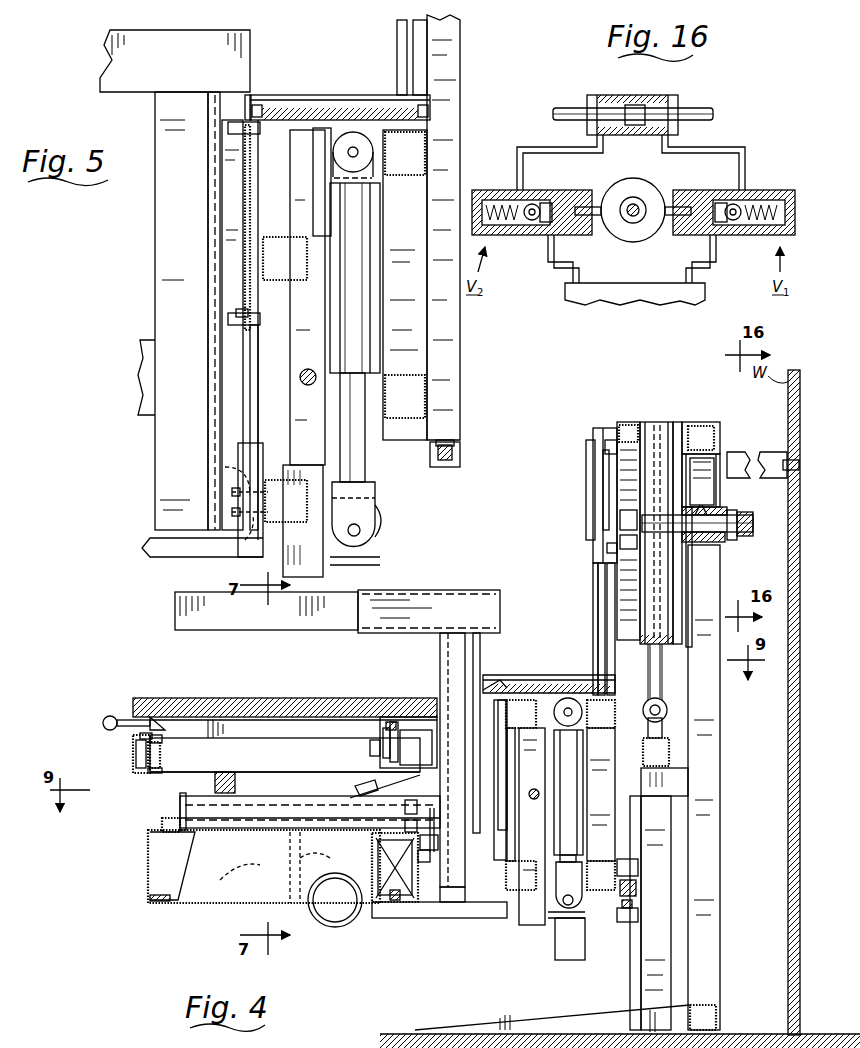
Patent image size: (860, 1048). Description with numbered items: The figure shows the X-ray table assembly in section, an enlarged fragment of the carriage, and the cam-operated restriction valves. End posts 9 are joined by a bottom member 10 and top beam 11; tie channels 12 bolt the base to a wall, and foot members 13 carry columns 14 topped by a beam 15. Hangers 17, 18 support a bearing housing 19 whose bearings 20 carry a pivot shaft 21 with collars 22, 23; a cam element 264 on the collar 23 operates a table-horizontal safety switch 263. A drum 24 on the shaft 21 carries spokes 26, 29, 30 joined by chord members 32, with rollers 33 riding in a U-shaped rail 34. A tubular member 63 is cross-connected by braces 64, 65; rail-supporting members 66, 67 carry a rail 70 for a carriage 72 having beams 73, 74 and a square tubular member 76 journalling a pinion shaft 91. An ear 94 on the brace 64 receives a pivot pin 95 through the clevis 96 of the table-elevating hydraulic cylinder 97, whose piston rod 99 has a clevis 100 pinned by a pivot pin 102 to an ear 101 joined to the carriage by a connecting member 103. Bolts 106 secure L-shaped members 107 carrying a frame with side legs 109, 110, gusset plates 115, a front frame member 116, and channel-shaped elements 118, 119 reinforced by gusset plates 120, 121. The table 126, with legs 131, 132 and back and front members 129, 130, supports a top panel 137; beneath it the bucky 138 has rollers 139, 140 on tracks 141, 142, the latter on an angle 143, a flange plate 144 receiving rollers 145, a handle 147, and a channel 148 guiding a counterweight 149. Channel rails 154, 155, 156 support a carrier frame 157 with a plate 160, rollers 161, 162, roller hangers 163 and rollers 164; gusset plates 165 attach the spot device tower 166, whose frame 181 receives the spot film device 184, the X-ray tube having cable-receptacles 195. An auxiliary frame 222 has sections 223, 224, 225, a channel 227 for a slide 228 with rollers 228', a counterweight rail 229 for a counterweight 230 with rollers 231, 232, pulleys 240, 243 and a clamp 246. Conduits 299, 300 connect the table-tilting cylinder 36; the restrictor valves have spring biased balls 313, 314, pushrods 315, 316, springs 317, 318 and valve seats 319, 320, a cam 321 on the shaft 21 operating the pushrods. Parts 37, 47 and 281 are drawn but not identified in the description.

In FIG. 4, the upright column 9 is at (720, 750).
In FIG. 4, the base block 10 is at (713, 1010).
In FIG. 4, the bearing housing 11 is at (700, 422).
In FIG. 4, the bracket 12 is at (740, 454).
In FIG. 4, the floor 13 is at (502, 1028).
In FIG. 4, the lower column 14 is at (641, 996).
In FIG. 4, the block 15 is at (652, 775).
In FIG. 4, the shaft 17 is at (681, 422).
In FIG. 4, the gear housing 18 is at (718, 428).
In FIG. 4, the collar 19 is at (732, 545).
In FIG. 4, the gear 20 is at (703, 486).
In FIG. 16, the shaft 21 is at (631, 224).
In FIG. 4, the shaft 21 is at (705, 535).
In FIG. 4, the support 22 is at (688, 570).
In FIG. 4, the nut 23 is at (743, 538).
In FIG. 4, the vertical column 24 is at (647, 422).
In FIG. 4, the guide strip 26 is at (632, 838).
In FIG. 4, the plate 29 is at (613, 462).
In FIG. 4, the gear rack 30 is at (625, 422).
In FIG. 4, the block 32 is at (634, 878).
In FIG. 5, the stop 33 is at (442, 462).
In FIG. 4, the stop 33 is at (628, 925).
In FIG. 5, the stop member 34 is at (456, 456).
In FIG. 4, the stop member 34 is at (620, 922).
In FIG. 16, the valve body 36 is at (658, 100).
In FIG. 4, the valve body 36 is at (668, 716).
In FIG. 16, the valve stem 37 is at (634, 100).
In FIG. 4, the valve stem 37 is at (667, 706).
In FIG. 4, the block 47 is at (668, 746).
In FIG. 5, the frame column 63 is at (415, 327).
In FIG. 4, the frame column 63 is at (605, 770).
In FIG. 5, the upper cross member 64 is at (428, 151).
In FIG. 4, the upper cross member 64 is at (610, 712).
In FIG. 5, the lower cross member 65 is at (412, 420).
In FIG. 4, the lower cross member 65 is at (602, 860).
In FIG. 5, the clevis 66 is at (380, 521).
In FIG. 4, the plate 67 is at (560, 945).
In FIG. 5, the frame 70 is at (313, 163).
In FIG. 5, the bar 72 is at (287, 396).
In FIG. 4, the bar 72 is at (518, 920).
In FIG. 5, the upper cross bar 73 is at (274, 238).
In FIG. 4, the upper cross bar 73 is at (497, 676).
In FIG. 5, the lower cross bar 74 is at (281, 480).
In FIG. 4, the lower cross bar 74 is at (513, 860).
In FIG. 4, the strip 76 is at (505, 762).
In FIG. 5, the pin 91 is at (307, 385).
In FIG. 4, the pin 91 is at (535, 800).
In FIG. 5, the clevis 94 is at (333, 152).
In FIG. 5, the pin 95 is at (358, 158).
In FIG. 5, the cylinder head 96 is at (340, 177).
In FIG. 5, the hydraulic cylinder 97 is at (372, 229).
In FIG. 4, the hydraulic cylinder 97 is at (578, 801).
In FIG. 5, the piston rod 99 is at (364, 467).
In FIG. 5, the rod end 100 is at (375, 508).
In FIG. 4, the rod end 100 is at (577, 892).
In FIG. 5, the plate 101 is at (336, 560).
In FIG. 4, the plate 101 is at (550, 917).
In FIG. 5, the pin 102 is at (358, 533).
In FIG. 4, the pin 102 is at (570, 907).
In FIG. 5, the plate 103 is at (300, 465).
In FIG. 5, the bracket 106 is at (234, 482).
In FIG. 4, the base plate 107 is at (415, 917).
In FIG. 4, the roller 109 is at (379, 895).
In FIG. 4, the housing 110 is at (410, 890).
In FIG. 4, the member 115 is at (275, 863).
In FIG. 4, the box 116 is at (148, 875).
In FIG. 4, the roller rim 118 is at (379, 895).
In FIG. 4, the block 119 is at (453, 895).
In FIG. 4, the inner housing 120 is at (400, 857).
In FIG. 4, the pad 121 is at (392, 905).
In FIG. 4, the latch 126 is at (128, 756).
In FIG. 4, the housing 129 is at (415, 717).
In FIG. 4, the latch plate 130 is at (135, 763).
In FIG. 4, the post 131 is at (238, 789).
In FIG. 4, the pawl 132 is at (376, 784).
In FIG. 4, the top plate 137 is at (140, 698).
In FIG. 4, the rail 138 is at (215, 718).
In FIG. 4, the latch bolt 139 is at (158, 745).
In FIG. 4, the block 140 is at (372, 750).
In FIG. 4, the strip 141 is at (153, 775).
In FIG. 4, the nut 142 is at (386, 726).
In FIG. 4, the plate 143 is at (385, 728).
In FIG. 4, the link 144 is at (162, 738).
In FIG. 4, the pin 145 is at (140, 736).
In FIG. 4, the handle 147 is at (103, 723).
In FIG. 4, the spring 148 is at (395, 722).
In FIG. 4, the block 149 is at (420, 747).
In FIG. 4, the block 154 is at (170, 821).
In FIG. 4, the pin 155 is at (412, 820).
In FIG. 4, the block 156 is at (428, 852).
In FIG. 4, the table 157 is at (268, 794).
In FIG. 4, the strip 160 is at (198, 795).
In FIG. 4, the wedge 161 is at (180, 838).
In FIG. 4, the pin 162 is at (405, 804).
In FIG. 4, the rod 163 is at (434, 810).
In FIG. 4, the block 164 is at (436, 840).
In FIG. 5, the bracket 165 is at (148, 343).
In FIG. 5, the upright 166 is at (153, 205).
In FIG. 4, the upright 166 is at (481, 640).
In FIG. 4, the beam 181 is at (455, 592).
In FIG. 4, the beam 184 is at (207, 630).
In FIG. 4, the member 195 is at (296, 878).
In FIG. 4, the strip 222 is at (593, 605).
In FIG. 5, the column 223 is at (430, 70).
In FIG. 4, the column 223 is at (598, 622).
In FIG. 5, the cross bar 224 is at (292, 110).
In FIG. 4, the cross bar 224 is at (577, 697).
In FIG. 5, the bar 225 is at (254, 328).
In FIG. 4, the bar 225 is at (505, 737).
In FIG. 5, the bar 227 is at (243, 198).
In FIG. 5, the bracket 228 is at (258, 329).
In FIG. 5, the bracket 228' is at (212, 148).
In FIG. 4, the plate 229 is at (610, 480).
In FIG. 4, the plate 230 is at (610, 500).
In FIG. 4, the plate 231 is at (600, 438).
In FIG. 4, the block 232 is at (607, 546).
In FIG. 4, the strip 240 is at (607, 668).
In FIG. 4, the bracket 243 is at (497, 688).
In FIG. 5, the column 246 is at (246, 110).
In FIG. 4, the column 246 is at (465, 685).
In FIG. 4, the bearing 263 is at (730, 505).
In FIG. 4, the bearing 264 is at (733, 535).
In FIG. 16, the reservoir 281 is at (630, 308).
In FIG. 16, the conduit 299 is at (728, 150).
In FIG. 16, the conduit 300 is at (531, 152).
In FIG. 16, the piston 313 is at (734, 222).
In FIG. 16, the piston 314 is at (531, 222).
In FIG. 16, the rod 315 is at (675, 205).
In FIG. 16, the rod 316 is at (600, 218).
In FIG. 16, the seat 317 is at (715, 203).
In FIG. 16, the seat 318 is at (558, 204).
In FIG. 16, the valve block 319 is at (738, 206).
In FIG. 16, the valve block 320 is at (562, 197).
In FIG. 16, the cam 321 is at (646, 228).